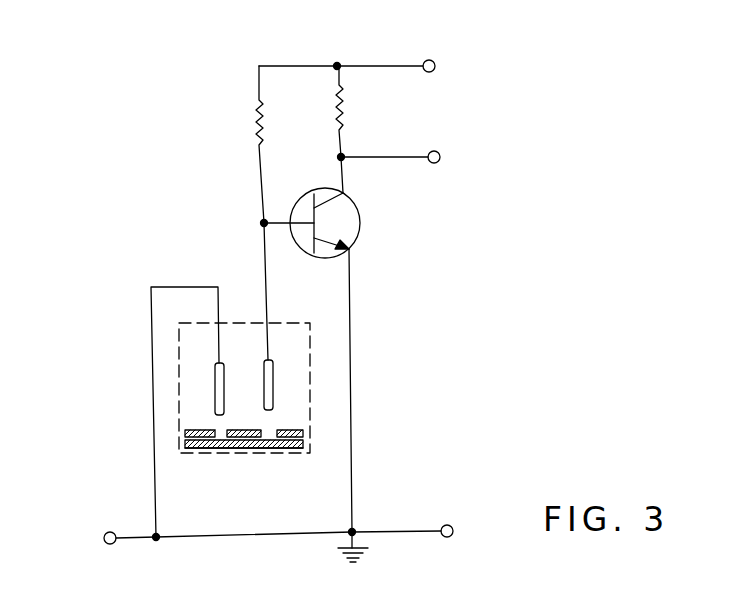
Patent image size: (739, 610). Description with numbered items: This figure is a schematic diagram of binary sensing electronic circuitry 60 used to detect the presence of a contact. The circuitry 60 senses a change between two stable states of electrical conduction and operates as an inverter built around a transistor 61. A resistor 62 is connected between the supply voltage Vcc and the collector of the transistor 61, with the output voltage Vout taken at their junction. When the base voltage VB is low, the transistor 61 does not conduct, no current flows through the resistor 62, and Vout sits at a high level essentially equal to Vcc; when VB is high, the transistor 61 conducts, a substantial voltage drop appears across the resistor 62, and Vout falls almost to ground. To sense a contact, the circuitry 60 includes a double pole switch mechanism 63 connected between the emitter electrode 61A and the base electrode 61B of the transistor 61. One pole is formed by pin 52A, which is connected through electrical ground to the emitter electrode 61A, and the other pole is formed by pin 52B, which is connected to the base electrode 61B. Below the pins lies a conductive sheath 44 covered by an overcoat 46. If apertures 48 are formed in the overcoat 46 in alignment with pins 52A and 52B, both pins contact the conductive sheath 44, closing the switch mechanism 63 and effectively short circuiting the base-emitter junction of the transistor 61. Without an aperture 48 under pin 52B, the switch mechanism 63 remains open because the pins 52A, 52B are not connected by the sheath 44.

The electronic circuitry 60 is at (108, 172).
The resistor 62 is at (339, 100).
The transistor 61 is at (358, 228).
The base electrode 61B is at (300, 226).
The emitter electrode 61A is at (328, 243).
The double pole switch mechanism 63 is at (128, 370).
The pin 52A is at (214, 392).
The pin 52B is at (278, 397).
The overcoat 46 is at (283, 428).
The apertures 48 is at (223, 440).
The conductive sheath 44 is at (268, 436).